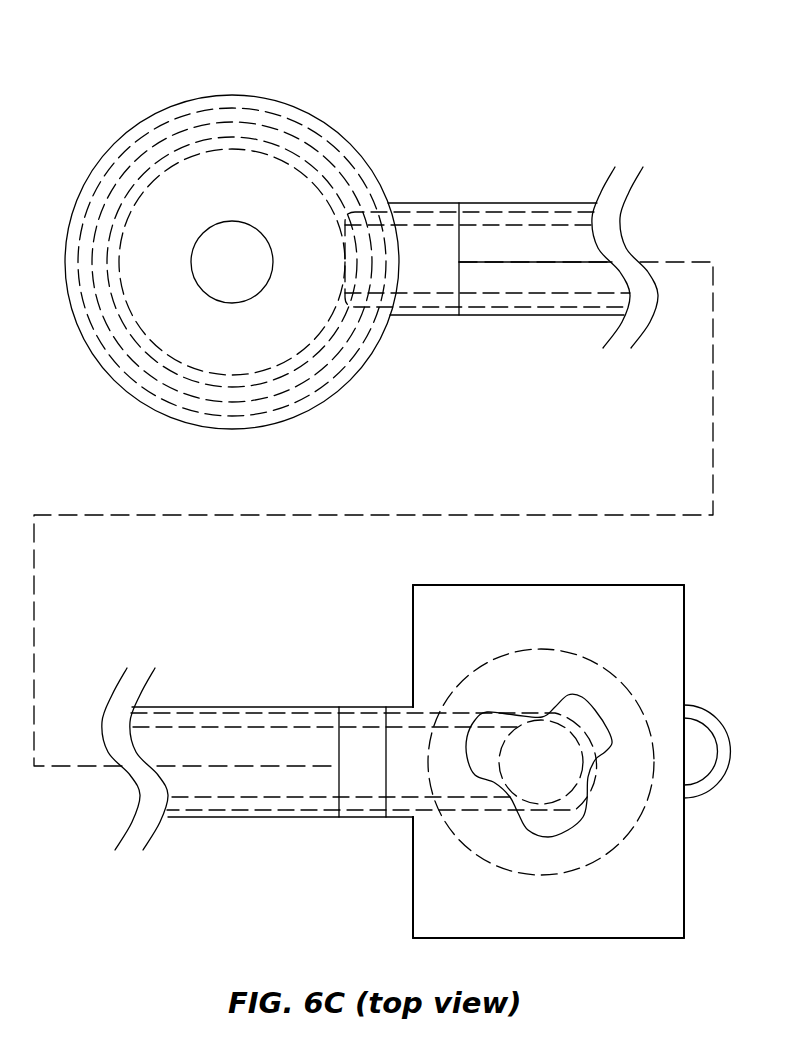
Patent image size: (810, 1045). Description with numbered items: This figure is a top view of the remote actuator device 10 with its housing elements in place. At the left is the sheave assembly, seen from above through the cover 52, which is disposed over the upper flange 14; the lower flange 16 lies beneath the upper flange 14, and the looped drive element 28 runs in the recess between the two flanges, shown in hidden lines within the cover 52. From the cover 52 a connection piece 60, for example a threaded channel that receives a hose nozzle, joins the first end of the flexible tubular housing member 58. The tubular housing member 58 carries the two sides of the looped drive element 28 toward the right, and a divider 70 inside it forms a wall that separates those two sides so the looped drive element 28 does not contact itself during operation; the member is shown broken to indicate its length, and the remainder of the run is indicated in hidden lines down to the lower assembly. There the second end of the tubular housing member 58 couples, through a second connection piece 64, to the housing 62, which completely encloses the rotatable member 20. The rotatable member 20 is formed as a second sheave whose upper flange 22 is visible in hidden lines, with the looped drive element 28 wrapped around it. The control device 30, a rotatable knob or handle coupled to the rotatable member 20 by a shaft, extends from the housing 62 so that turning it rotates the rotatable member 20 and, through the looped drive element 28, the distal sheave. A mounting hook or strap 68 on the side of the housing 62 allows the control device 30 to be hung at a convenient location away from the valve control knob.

The remote actuator device 10 is at (103, 64).
The upper flange 14 is at (215, 120).
The lower flange 16 is at (290, 118).
The cover 52 is at (343, 133).
The looped drive element 28 is at (418, 212).
The divider 70 is at (517, 260).
The connection piece 60 is at (415, 315).
The tubular housing member 58 is at (517, 315).
The second connection piece 64 is at (363, 818).
The housing 62 is at (597, 938).
The rotatable member 20 is at (627, 663).
The upper flange 22 is at (555, 650).
The control device 30 is at (563, 833).
The mounting hook or strap 68 is at (707, 712).